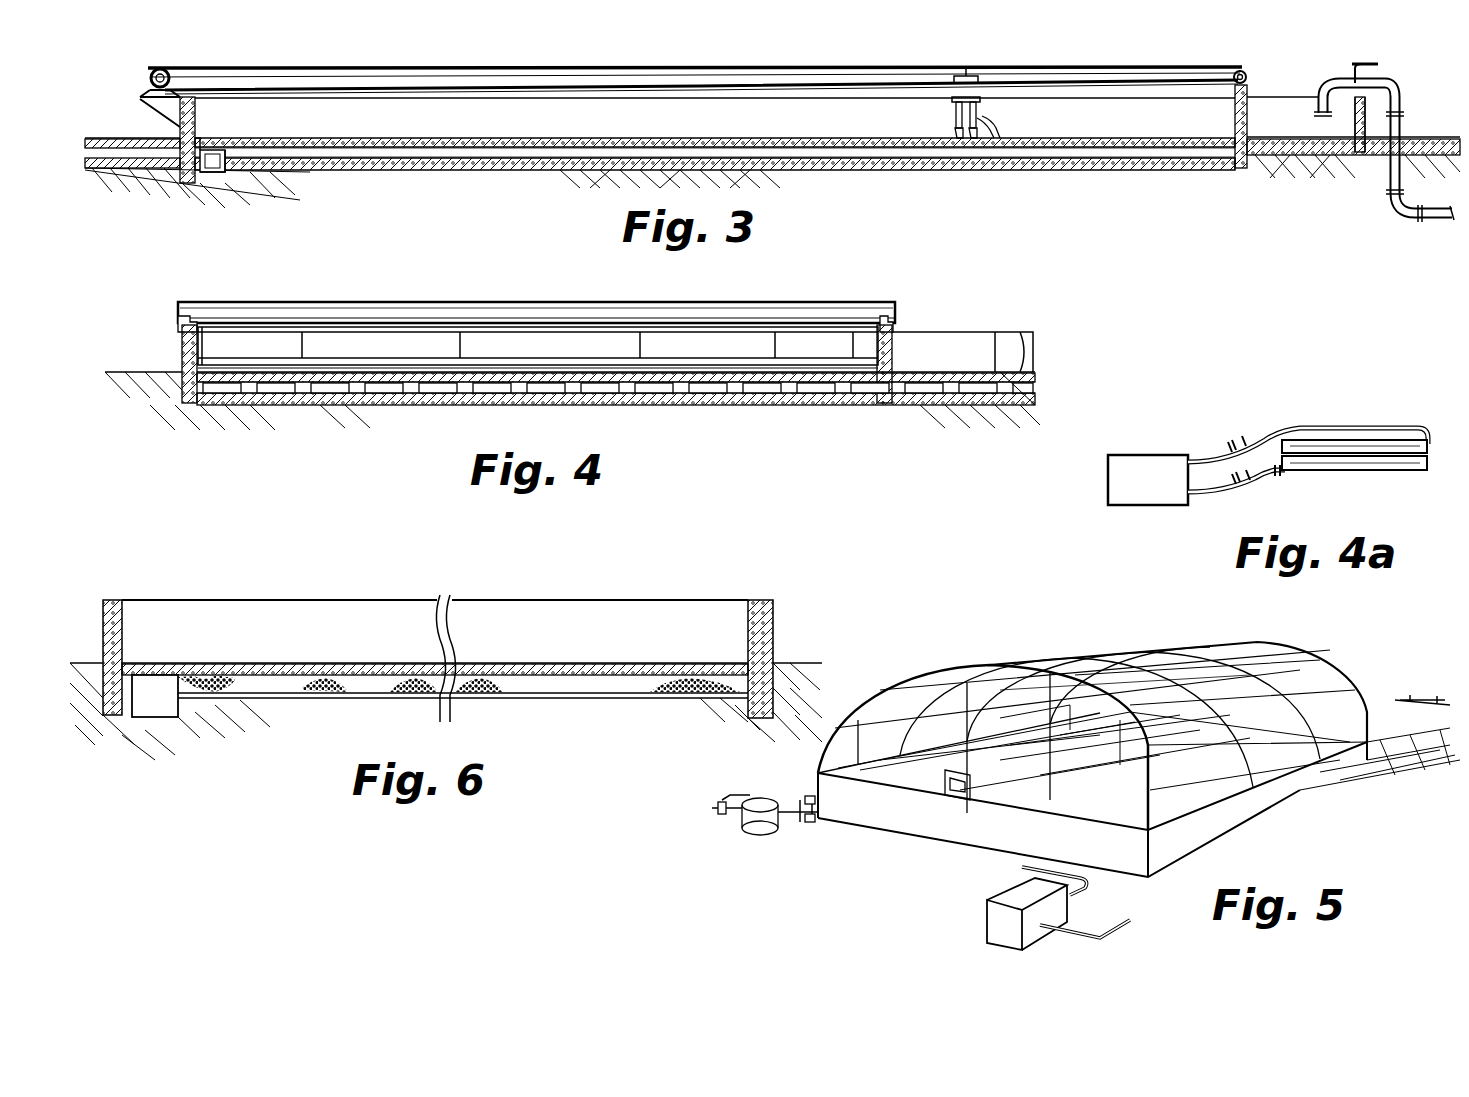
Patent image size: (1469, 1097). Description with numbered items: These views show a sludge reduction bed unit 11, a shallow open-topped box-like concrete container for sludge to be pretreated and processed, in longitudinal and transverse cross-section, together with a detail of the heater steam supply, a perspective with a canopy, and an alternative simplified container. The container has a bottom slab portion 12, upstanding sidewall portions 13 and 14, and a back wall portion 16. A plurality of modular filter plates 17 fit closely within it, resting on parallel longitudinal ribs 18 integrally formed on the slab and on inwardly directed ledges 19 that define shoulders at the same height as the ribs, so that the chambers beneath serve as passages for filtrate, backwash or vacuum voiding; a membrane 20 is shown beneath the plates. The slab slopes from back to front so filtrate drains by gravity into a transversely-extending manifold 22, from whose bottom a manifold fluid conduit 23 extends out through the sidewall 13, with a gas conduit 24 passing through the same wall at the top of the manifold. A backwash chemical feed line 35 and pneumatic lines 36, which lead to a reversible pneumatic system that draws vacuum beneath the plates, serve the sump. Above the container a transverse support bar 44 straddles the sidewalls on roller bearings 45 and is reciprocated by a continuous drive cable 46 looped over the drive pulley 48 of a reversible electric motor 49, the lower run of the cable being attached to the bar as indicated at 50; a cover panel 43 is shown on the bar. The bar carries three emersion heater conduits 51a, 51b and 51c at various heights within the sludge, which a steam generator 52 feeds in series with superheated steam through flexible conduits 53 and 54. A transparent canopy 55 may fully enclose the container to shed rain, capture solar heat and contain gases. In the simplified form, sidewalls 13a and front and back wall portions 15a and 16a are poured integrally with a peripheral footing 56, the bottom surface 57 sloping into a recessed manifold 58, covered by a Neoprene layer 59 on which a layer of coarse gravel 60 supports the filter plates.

In FIG. 5, the sludge container unit 11 is at (922, 845).
In FIG. 3, the bottom slab portion 12 is at (440, 170).
In FIG. 4, the bottom slab portion 12 is at (410, 400).
In FIG. 3, the upstanding sidewall portion 13 is at (555, 115).
In FIG. 4, the upstanding sidewall portion 13 is at (182, 348).
In FIG. 6, the upstanding sidewall 13a is at (580, 610).
In FIG. 4, the upstanding sidewall portion 14 is at (895, 342).
In FIG. 6, the front wall portion 15a is at (98, 610).
In FIG. 3, the back wall portion 16 is at (1250, 112).
In FIG. 6, the back wall portion 16a is at (775, 625).
In FIG. 3, the modular filter plates 17 is at (660, 128).
In FIG. 4, the modular filter plates 17 is at (448, 384).
In FIG. 6, the modular filter plates 17 is at (408, 663).
In FIG. 4, the ribs 18 is at (328, 393).
In FIG. 3, the inwardly directed ledges 19 is at (190, 146).
In FIG. 4, the inwardly directed ledges 19 is at (185, 380).
In FIG. 3, the floor membrane 20 is at (488, 160).
In FIG. 4, the floor membrane 20 is at (380, 396).
In FIG. 3, the transversely-extending manifold 22 is at (228, 152).
In FIG. 3, the manifold fluid conduit 23 is at (212, 176).
In FIG. 3, the gas conduit 24 is at (222, 138).
In FIG. 3, the backwash chemical feed line 35 is at (142, 170).
In FIG. 3, the pneumatic lines 36 is at (150, 138).
In FIG. 4, the cover panel 43 is at (318, 335).
In FIG. 3, the transverse support bar 44 is at (978, 82).
In FIG. 4, the transverse support bar 44 is at (490, 302).
In FIG. 4, the roller bearings 45 is at (178, 322).
In FIG. 3, the continuous drive cable 46 is at (692, 76).
In FIG. 4, the continuous drive cable 46 is at (548, 304).
In FIG. 3, the drive pulley 48 is at (165, 69).
In FIG. 3, the reversible electric motor 49 is at (150, 75).
In FIG. 3, the cable attachment point 50 is at (958, 78).
In FIG. 3, the emersion heater conduit 51a is at (960, 150).
In FIG. 4, the emersion heater conduit 51a is at (320, 376).
In FIG. 4A, the emersion heater conduit 51a is at (1380, 440).
In FIG. 3, the emersion heater conduit 51b is at (978, 150).
In FIG. 4, the emersion heater conduit 51b is at (372, 376).
In FIG. 4A, the emersion heater conduit 51b is at (1352, 470).
In FIG. 3, the emersion heater conduit 51c is at (1000, 148).
In FIG. 4, the emersion heater conduit 51c is at (430, 376).
In FIG. 4A, the emersion heater conduit 51c is at (1375, 470).
In FIG. 4A, the steam generator 52 is at (1162, 491).
In FIG. 5, the steam generator 52 is at (987, 915).
In FIG. 4A, the flexible conduit 53 is at (1220, 455).
In FIG. 5, the flexible conduit 53 is at (1022, 870).
In FIG. 4A, the flexible conduit 54 is at (1208, 490).
In FIG. 5, the flexible conduit 54 is at (1118, 925).
In FIG. 5, the transparent canopy 55 is at (1186, 647).
In FIG. 6, the peripheral footing 56 is at (740, 712).
In FIG. 6, the sloped interior bottom surface 57 is at (270, 698).
In FIG. 6, the recessed transversely-extending manifold 58 is at (152, 705).
In FIG. 6, the moisture impervious layer 59 is at (346, 680).
In FIG. 6, the layer of coarse clean gravel 60 is at (210, 668).